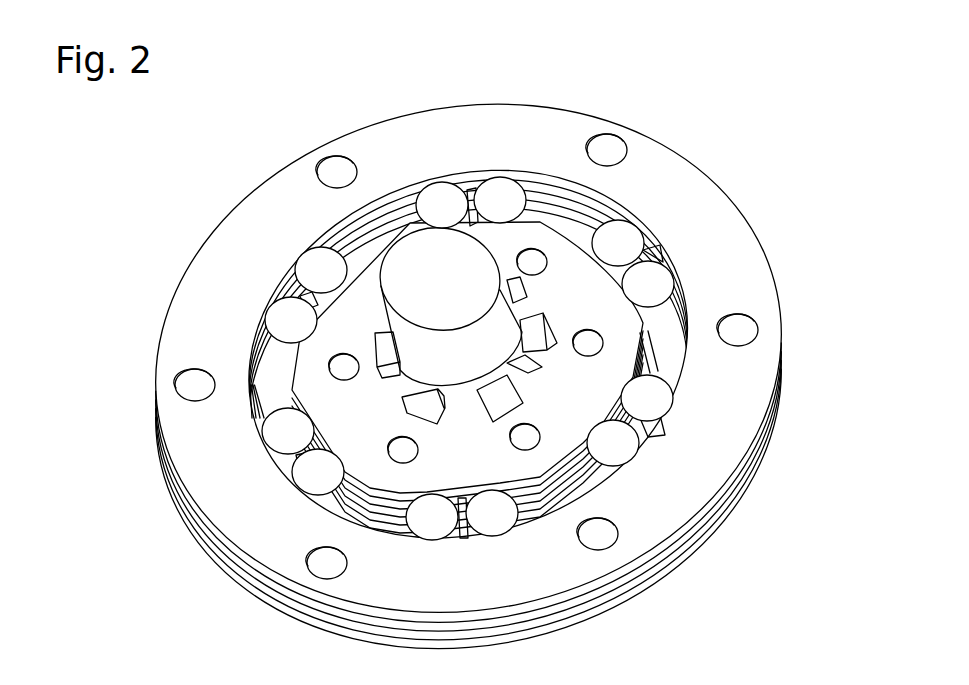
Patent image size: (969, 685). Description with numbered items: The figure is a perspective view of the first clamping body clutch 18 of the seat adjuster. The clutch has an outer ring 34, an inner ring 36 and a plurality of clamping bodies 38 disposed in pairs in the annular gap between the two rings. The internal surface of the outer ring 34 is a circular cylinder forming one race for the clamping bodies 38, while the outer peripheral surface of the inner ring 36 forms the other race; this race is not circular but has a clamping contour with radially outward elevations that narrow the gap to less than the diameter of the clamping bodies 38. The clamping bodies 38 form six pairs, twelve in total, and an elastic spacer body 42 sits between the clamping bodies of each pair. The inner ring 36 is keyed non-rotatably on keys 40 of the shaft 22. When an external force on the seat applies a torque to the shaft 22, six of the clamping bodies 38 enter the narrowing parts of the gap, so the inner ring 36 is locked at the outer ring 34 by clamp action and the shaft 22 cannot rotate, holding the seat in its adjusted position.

The first clamping body clutch 18 is at (441, 358).
The shaft 22 is at (423, 267).
The outer ring 34 is at (697, 182).
The inner ring 36 is at (357, 290).
The clamping bodies 38 is at (507, 193).
The keys 40 is at (533, 327).
The elastic spacer body 42 is at (653, 430).